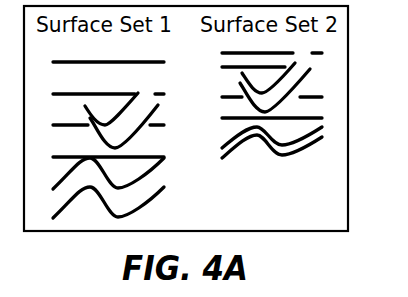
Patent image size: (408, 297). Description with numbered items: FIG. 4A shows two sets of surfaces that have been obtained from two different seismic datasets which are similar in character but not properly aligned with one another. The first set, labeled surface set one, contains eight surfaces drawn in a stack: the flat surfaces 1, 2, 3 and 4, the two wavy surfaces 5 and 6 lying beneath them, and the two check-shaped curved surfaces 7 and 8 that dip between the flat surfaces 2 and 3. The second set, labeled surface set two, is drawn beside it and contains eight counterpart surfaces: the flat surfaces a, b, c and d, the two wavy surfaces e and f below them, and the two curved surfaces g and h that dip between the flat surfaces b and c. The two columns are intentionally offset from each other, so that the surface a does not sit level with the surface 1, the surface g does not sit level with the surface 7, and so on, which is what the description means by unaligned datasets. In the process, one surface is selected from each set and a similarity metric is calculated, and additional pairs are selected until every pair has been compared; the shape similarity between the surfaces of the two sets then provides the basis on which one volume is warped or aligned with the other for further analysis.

The surface 1 is at (100, 62).
The surface 2 is at (86, 93).
The surface 3 is at (100, 125).
The surface 4 is at (100, 156).
The surface 5 is at (100, 178).
The surface 6 is at (100, 208).
The surface 7 is at (124, 104).
The surface 8 is at (131, 125).
The surface a is at (264, 49).
The surface b is at (246, 69).
The surface c is at (264, 97).
The surface d is at (264, 117).
The surface e is at (264, 139).
The surface f is at (265, 153).
The surface g is at (274, 70).
The surface h is at (281, 87).